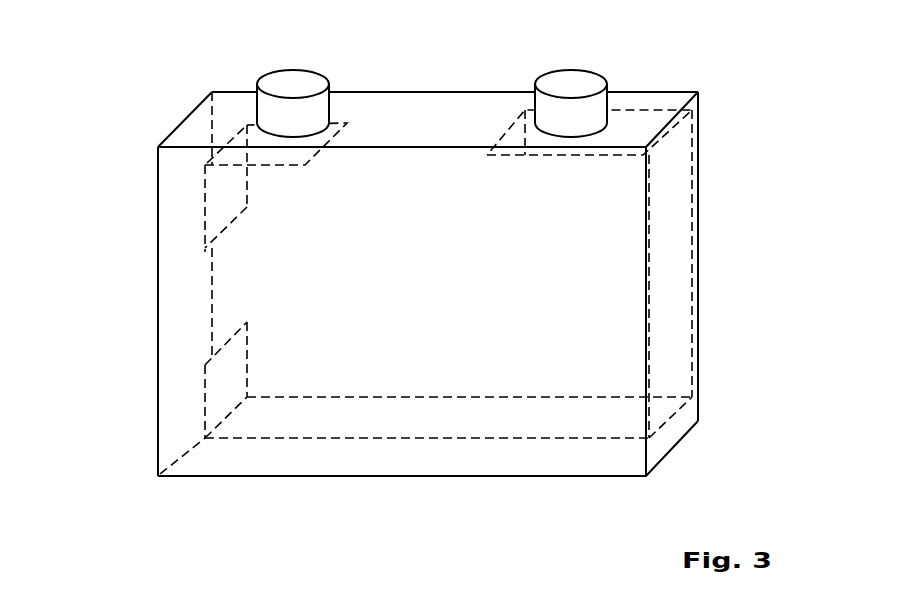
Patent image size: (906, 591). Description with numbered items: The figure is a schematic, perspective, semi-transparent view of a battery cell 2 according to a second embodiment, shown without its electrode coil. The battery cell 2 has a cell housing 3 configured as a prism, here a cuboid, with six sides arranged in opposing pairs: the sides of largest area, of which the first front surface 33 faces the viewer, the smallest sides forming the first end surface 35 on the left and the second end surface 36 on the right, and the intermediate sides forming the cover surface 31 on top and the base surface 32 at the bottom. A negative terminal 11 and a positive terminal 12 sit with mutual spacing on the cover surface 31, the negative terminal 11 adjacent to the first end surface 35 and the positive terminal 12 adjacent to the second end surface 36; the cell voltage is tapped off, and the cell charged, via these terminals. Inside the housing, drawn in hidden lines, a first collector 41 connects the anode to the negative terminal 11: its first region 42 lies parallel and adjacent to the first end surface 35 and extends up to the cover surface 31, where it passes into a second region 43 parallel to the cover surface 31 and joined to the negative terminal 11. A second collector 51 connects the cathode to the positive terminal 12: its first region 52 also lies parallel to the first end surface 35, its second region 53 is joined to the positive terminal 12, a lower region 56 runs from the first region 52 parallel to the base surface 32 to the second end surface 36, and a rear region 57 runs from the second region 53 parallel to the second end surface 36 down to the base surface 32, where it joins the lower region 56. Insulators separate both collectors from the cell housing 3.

The battery cell 2 is at (116, 98).
The cell housing 3 is at (652, 98).
The negative terminal 11 is at (292, 75).
The positive terminal 12 is at (570, 75).
The cover surface 31 is at (383, 110).
The base surface 32 is at (578, 480).
The first front surface 33 is at (620, 353).
The first end surface 35 is at (155, 178).
The second end surface 36 is at (697, 158).
The first collector 41 is at (205, 200).
The first region 42 is at (205, 229).
The second region 43 is at (242, 125).
The second collector 51 is at (418, 425).
The first region 52 is at (205, 392).
The second region 53 is at (527, 117).
The lower region 56 is at (470, 425).
The rear region 57 is at (682, 217).